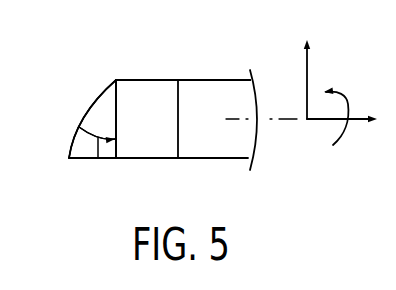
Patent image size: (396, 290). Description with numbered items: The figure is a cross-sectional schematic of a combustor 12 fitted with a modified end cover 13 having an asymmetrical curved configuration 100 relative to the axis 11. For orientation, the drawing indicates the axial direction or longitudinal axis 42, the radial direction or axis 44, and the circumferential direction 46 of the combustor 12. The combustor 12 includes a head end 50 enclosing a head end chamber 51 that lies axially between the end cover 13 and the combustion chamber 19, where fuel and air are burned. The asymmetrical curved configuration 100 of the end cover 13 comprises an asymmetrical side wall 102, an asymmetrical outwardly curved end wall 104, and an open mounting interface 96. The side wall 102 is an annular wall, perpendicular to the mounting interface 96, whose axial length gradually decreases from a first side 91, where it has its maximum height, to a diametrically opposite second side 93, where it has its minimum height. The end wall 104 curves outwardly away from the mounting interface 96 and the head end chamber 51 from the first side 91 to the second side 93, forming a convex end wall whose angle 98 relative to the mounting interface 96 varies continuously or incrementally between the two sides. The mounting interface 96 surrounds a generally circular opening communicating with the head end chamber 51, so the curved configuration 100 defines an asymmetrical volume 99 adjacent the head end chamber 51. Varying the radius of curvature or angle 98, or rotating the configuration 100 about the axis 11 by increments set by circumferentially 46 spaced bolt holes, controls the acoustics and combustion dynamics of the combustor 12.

The axis 11 is at (262, 121).
The combustor 12 is at (227, 47).
The end cover 13 is at (93, 88).
The combustion chamber 19 is at (217, 129).
The axial direction or axis 42 is at (327, 120).
The radial direction or axis 44 is at (306, 83).
The circumferential direction or axis 46 is at (350, 98).
The head end 50 is at (152, 65).
The head end chamber 51 is at (156, 128).
The first side 91 is at (118, 159).
The second side 93 is at (115, 80).
The open mounting interface 96 is at (117, 120).
The angle 98 is at (98, 140).
The asymmetrical chamber or volume 99 is at (92, 143).
The asymmetrical curved configuration 100 is at (72, 107).
The asymmetrical side wall 102 is at (107, 159).
The asymmetrical outwardly curved end wall 104 is at (109, 84).